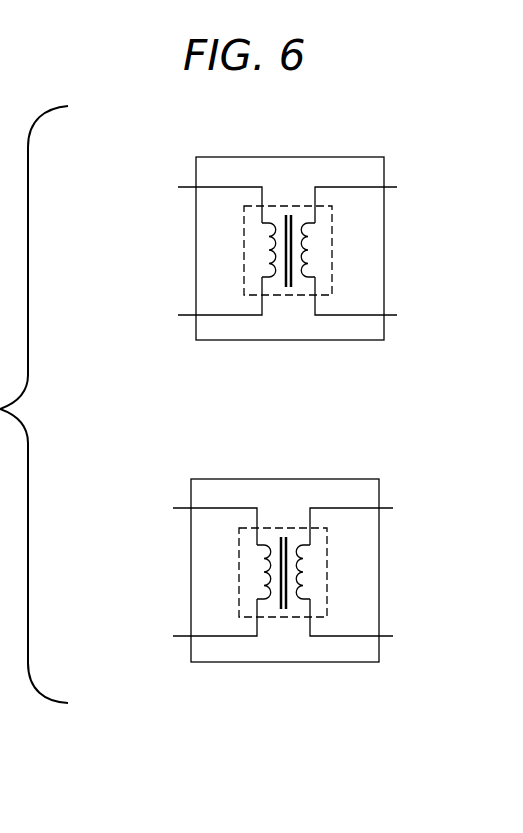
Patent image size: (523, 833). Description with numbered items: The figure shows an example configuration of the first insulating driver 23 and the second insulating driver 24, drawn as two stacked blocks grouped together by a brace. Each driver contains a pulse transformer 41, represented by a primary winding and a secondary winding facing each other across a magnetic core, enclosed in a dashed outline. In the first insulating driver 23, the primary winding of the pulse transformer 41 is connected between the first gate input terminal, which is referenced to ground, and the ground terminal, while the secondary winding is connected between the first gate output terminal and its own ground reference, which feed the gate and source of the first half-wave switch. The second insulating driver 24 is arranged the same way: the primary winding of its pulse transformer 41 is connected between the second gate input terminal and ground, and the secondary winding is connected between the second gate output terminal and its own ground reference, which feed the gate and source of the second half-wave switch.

The first insulating driver 23 is at (248, 157).
The second insulating driver 24 is at (243, 479).
The pulse transformer 41 is at (289, 204).